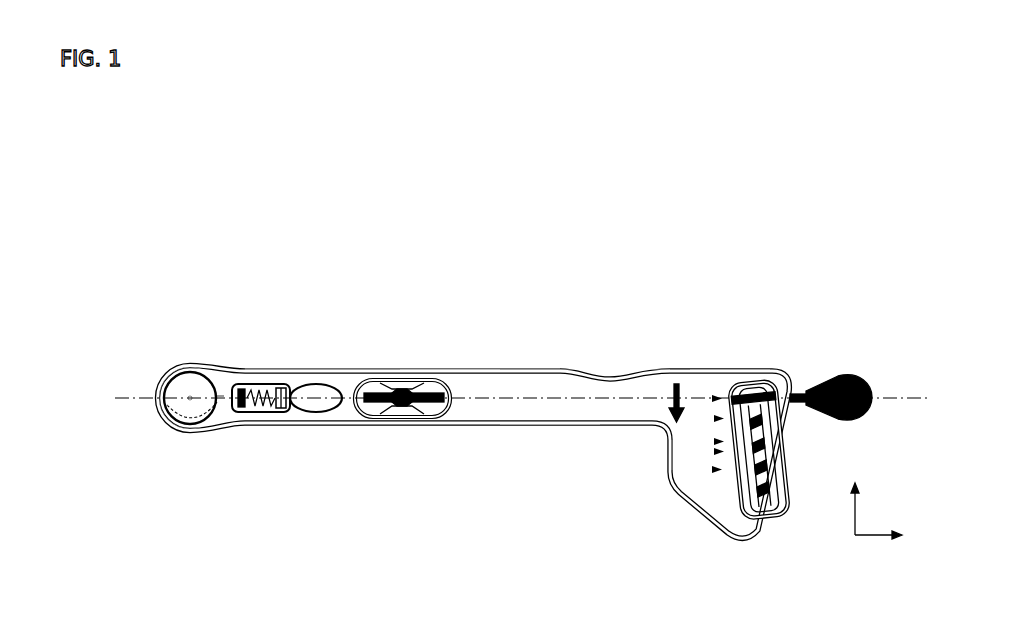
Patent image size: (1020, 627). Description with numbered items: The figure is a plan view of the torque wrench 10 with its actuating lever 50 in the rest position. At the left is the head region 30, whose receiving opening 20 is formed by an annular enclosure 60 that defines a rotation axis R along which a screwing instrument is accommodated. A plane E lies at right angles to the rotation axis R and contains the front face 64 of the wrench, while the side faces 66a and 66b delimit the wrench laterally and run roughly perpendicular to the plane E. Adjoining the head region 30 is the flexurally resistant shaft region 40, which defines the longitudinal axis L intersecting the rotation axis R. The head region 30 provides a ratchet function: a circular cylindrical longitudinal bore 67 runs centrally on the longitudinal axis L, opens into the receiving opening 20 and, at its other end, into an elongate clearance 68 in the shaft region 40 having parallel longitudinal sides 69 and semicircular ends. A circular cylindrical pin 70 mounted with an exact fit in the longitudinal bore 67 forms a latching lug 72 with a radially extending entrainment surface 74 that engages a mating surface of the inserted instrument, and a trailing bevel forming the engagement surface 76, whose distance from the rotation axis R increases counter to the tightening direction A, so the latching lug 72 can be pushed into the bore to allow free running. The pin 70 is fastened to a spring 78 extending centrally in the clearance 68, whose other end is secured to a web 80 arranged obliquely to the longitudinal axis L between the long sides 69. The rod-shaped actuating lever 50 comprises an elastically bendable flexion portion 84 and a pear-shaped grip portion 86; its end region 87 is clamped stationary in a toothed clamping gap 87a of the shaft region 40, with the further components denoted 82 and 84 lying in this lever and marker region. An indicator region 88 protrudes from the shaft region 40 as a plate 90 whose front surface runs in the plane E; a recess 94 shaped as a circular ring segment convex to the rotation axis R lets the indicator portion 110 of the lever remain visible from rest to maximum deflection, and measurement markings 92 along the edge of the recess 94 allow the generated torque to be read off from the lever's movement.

The torque wrench 10 is at (587, 280).
The receiving opening 20 is at (190, 382).
The head region 30 is at (215, 345).
The shaft region 40 is at (383, 338).
The actuating lever 50 is at (373, 412).
The annular enclosure 60 is at (168, 367).
The front face 64 is at (528, 388).
The side face 66a is at (448, 368).
The side face 66b is at (548, 427).
The longitudinal bore 67 is at (230, 384).
The clearance 68 is at (318, 413).
The longitudinal sides 69 is at (257, 382).
The pin 70 is at (243, 410).
The latching lug 72 is at (218, 410).
The entrainment surface 74 is at (215, 402).
The engagement surface (bevel) 76 is at (190, 403).
The spring 78 is at (265, 413).
The web 80 is at (290, 382).
The first marker 82 is at (437, 412).
The flexion portion 84 is at (402, 397).
The grip portion 86 is at (840, 378).
The end region 87 is at (404, 397).
The toothed clamping gap 87a is at (400, 413).
The indicator region 88 is at (723, 352).
The plate 90 is at (685, 480).
The measurement markings 92 is at (708, 478).
The recess 94 is at (760, 478).
The indicator portion 110 is at (755, 385).
The longitudinal axis L is at (513, 400).
The rotation axis R is at (162, 420).
The tightening direction A is at (660, 410).
The plane E is at (876, 511).